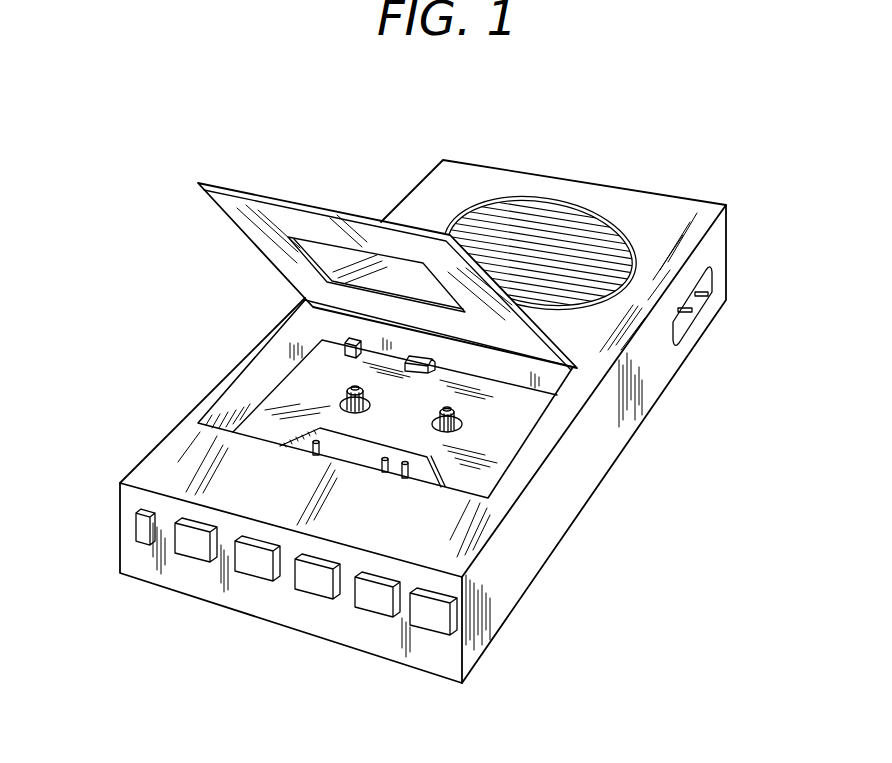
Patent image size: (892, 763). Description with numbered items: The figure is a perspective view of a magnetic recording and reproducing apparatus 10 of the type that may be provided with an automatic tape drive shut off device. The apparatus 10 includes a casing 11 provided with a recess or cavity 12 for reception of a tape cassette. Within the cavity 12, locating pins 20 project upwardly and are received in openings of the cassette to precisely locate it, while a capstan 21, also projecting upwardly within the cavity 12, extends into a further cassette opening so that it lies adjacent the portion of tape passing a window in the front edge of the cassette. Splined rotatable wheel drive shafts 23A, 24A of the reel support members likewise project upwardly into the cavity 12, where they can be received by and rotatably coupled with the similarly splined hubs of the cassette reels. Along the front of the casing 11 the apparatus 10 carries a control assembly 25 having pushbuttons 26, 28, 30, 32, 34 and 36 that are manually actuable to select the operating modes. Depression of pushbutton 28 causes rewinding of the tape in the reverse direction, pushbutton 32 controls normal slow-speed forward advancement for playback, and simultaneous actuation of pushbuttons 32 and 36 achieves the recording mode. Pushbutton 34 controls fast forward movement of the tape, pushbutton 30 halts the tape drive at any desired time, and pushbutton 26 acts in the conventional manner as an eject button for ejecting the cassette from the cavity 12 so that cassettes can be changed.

The magnetic recording and reproducing apparatus 10 is at (592, 458).
The casing 11 is at (668, 362).
The recess or cavity 12 is at (298, 392).
The locating pins 20 is at (330, 442).
The capstan 21 is at (407, 460).
The wheel drive shaft 23A is at (455, 413).
The wheel drive shaft 24A is at (350, 393).
The control assembly 25 is at (84, 566).
The pushbutton 26 is at (146, 545).
The pushbutton 28 is at (208, 563).
The pushbutton 30 is at (268, 582).
The pushbutton 32 is at (331, 600).
The pushbutton 34 is at (388, 616).
The pushbutton 36 is at (445, 630).